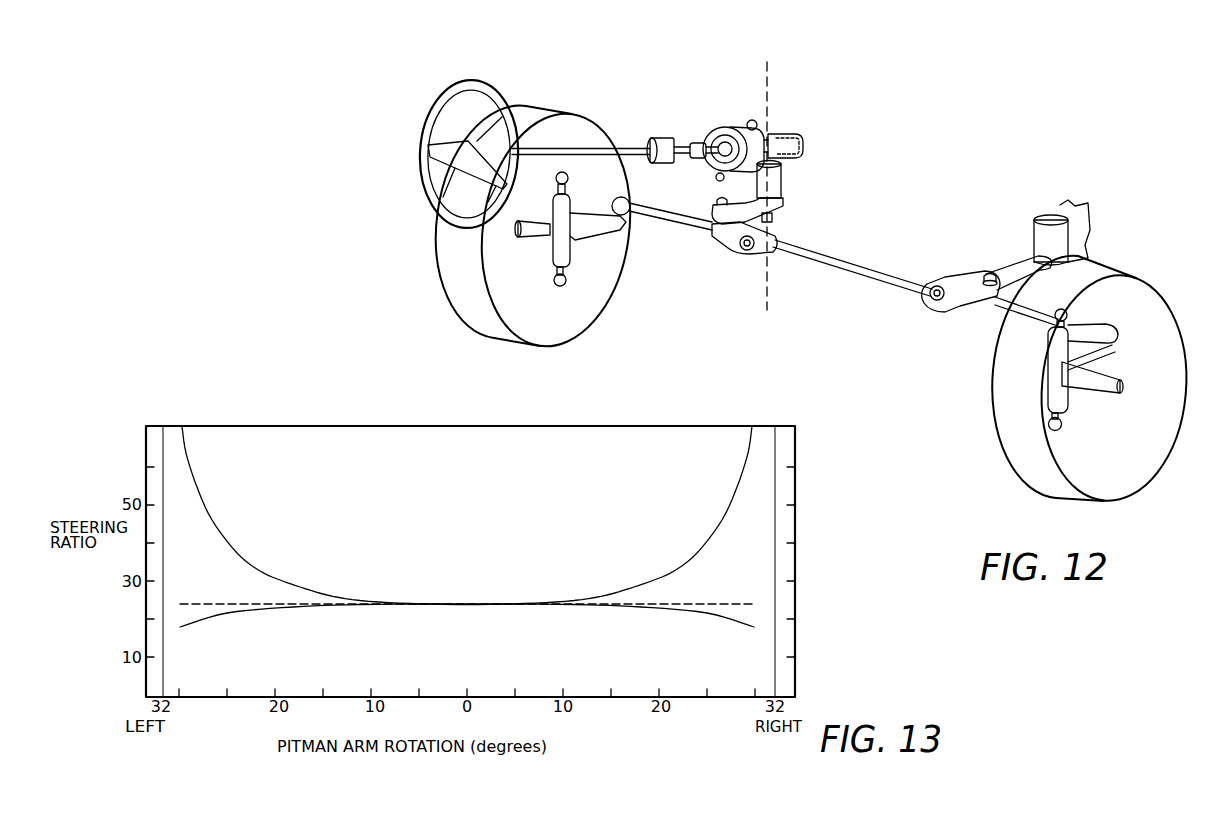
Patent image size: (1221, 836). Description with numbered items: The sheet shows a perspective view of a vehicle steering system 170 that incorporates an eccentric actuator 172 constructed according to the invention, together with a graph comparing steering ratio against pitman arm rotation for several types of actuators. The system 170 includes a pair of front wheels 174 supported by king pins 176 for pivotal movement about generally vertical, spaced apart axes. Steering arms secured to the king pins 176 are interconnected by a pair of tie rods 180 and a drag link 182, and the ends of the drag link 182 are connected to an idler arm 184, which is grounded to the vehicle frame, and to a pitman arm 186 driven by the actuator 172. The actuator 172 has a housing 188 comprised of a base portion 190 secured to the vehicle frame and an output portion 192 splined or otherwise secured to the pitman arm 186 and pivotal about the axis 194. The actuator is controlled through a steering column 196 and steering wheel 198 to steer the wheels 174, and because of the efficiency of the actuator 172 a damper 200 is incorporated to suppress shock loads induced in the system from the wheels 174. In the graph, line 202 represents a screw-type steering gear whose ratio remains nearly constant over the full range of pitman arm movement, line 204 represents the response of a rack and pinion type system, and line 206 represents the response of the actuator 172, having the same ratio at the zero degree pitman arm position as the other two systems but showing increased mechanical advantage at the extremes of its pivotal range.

In FIG. 12, the vehicle steering system 170 is at (954, 167).
In FIG. 12, the actuator 172 is at (814, 127).
In FIG. 12, the front wheels 174 is at (553, 316).
In FIG. 12, the king pins 176 is at (556, 238).
In FIG. 12, the tie rods 180 is at (675, 214).
In FIG. 12, the drag link 182 is at (862, 272).
In FIG. 12, the idler arm 184 is at (1018, 268).
In FIG. 12, the pitman arm 186 is at (737, 209).
In FIG. 12, the housing 188 is at (743, 122).
In FIG. 12, the base portion 190 is at (716, 137).
In FIG. 12, the output portion 192 is at (782, 172).
In FIG. 12, the axis 194 is at (772, 96).
In FIG. 12, the steering column 196 is at (582, 147).
In FIG. 12, the steering wheel 198 is at (492, 90).
In FIG. 12, the damper 200 is at (664, 138).
In FIG. 13, the line representing screw-type steering gear 202 is at (225, 602).
In FIG. 13, the line representing rack and pinion type system 204 is at (243, 615).
In FIG. 13, the line representing steering actuator response 206 is at (224, 537).